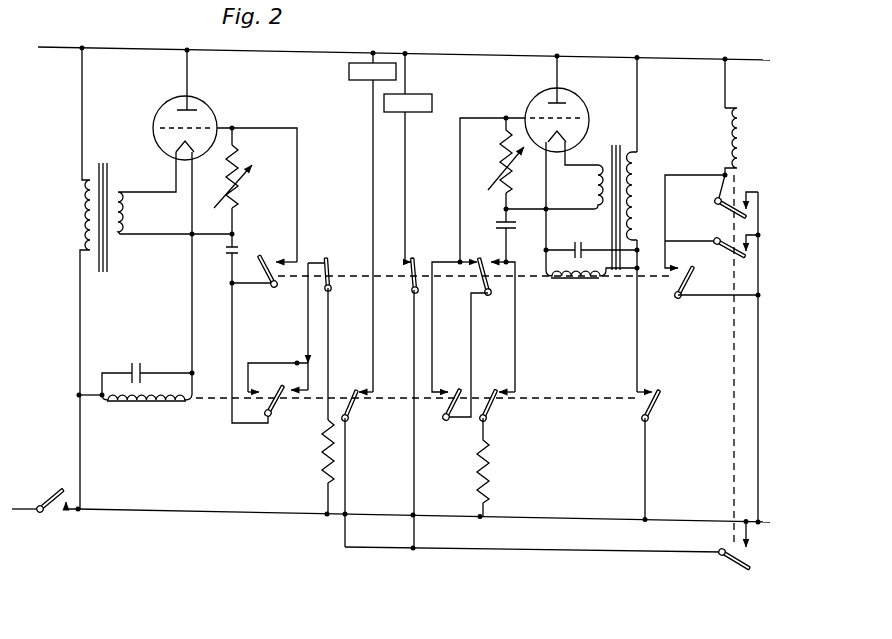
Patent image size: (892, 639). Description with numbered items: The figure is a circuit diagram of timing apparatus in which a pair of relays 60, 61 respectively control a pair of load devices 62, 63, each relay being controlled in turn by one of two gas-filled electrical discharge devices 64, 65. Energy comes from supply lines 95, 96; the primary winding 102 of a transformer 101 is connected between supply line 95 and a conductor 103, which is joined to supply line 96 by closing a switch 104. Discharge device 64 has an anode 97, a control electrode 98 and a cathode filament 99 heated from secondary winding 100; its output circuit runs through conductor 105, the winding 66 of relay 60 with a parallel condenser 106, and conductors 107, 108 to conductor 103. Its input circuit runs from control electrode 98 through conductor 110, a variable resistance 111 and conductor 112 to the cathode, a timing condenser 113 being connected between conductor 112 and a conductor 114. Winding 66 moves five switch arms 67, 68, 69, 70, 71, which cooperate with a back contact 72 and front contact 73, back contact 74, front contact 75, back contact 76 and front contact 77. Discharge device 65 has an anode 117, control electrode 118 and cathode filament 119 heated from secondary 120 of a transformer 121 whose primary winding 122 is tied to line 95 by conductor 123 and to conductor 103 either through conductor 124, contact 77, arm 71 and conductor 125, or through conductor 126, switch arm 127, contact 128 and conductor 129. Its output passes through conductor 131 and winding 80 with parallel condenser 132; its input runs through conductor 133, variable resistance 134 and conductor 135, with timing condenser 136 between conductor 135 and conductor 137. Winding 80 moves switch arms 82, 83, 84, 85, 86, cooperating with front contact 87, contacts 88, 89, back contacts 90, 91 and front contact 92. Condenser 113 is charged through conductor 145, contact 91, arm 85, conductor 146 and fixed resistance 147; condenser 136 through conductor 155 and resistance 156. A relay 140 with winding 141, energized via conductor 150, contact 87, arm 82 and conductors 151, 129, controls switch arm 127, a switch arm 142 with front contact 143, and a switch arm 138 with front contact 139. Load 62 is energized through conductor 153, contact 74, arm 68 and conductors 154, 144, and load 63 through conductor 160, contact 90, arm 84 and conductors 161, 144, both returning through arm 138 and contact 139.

The relay 60 is at (158, 412).
The relay 61 is at (580, 290).
The load device 62 is at (365, 82).
The load device 63 is at (420, 113).
The electrical discharge device 64 is at (218, 108).
The electrical discharge device 65 is at (588, 106).
The winding 66 is at (138, 406).
The switch arm 67 is at (274, 413).
The switch arm 68 is at (350, 415).
The switch arm 69 is at (444, 420).
The switch arm 70 is at (486, 420).
The switch arm 71 is at (649, 420).
The back contact 72 is at (289, 386).
The front contact 73 is at (256, 390).
The back contact 74 is at (356, 389).
The front contact 75 is at (451, 388).
The back contact 76 is at (499, 386).
The front contact 77 is at (655, 388).
The winding 80 is at (596, 290).
The switch arm 82 is at (696, 280).
The switch arm 83 is at (476, 284).
The switch arm 84 is at (412, 292).
The switch arm 85 is at (333, 290).
The switch arm 86 is at (262, 272).
The front contact 87 is at (678, 266).
The front contact 88 is at (486, 258).
The back contact 89 is at (470, 259).
The back contact 90 is at (416, 258).
The back contact 91 is at (327, 258).
The front contact 92 is at (274, 259).
The supply line 95 is at (60, 53).
The supply line 96 is at (30, 505).
The anode 97 is at (177, 100).
The control electrode 98 is at (162, 131).
The cathode filament 99 is at (167, 150).
The secondary winding 100 is at (126, 210).
The transformer 101 is at (109, 258).
The primary winding 102 is at (82, 218).
The conductor 103 is at (122, 512).
The switch 104 is at (54, 512).
The conductor 105 is at (191, 298).
The condenser 106 is at (145, 370).
The conductor 107 is at (88, 392).
The conductor 108 is at (82, 463).
The conductor 110 is at (238, 127).
The variable resistance 111 is at (250, 190).
The conductor 112 is at (220, 234).
The timing condenser 113 is at (226, 258).
The conductor 114 is at (230, 319).
The anode 117 is at (550, 98).
The control electrode 118 is at (585, 120).
The cathode filament 119 is at (570, 146).
The secondary 120 is at (598, 187).
The transformer 121 is at (612, 212).
The primary winding 122 is at (634, 196).
The conductor 123 is at (638, 112).
The conductor 124 is at (638, 321).
The conductor 125 is at (647, 468).
The conductor 126 is at (690, 240).
The switch arm 127 is at (728, 253).
The front contact 128 is at (760, 251).
The conductor 129 is at (759, 318).
The conductor 131 is at (546, 237).
The condenser 132 is at (583, 250).
The conductor 133 is at (520, 116).
The variable resistance 134 is at (504, 150).
The conductor 135 is at (512, 200).
The timing condenser 136 is at (500, 222).
The conductor 137 is at (472, 309).
The switch arm 138 is at (732, 562).
The front contact 139 is at (751, 550).
The relay 140 is at (745, 147).
The winding 141 is at (726, 130).
The switch arm 142 is at (730, 220).
The front contact 143 is at (760, 209).
The conductor 144 is at (520, 552).
The conductor 145 is at (265, 365).
The conductor 146 is at (330, 327).
The fixed resistance 147 is at (325, 450).
The conductor 150 is at (688, 177).
The conductor 151 is at (712, 297).
The conductor 153 is at (372, 140).
The conductor 154 is at (348, 460).
The conductor 155 is at (516, 321).
The resistance 156 is at (484, 464).
The conductor 160 is at (406, 168).
The conductor 161 is at (414, 461).